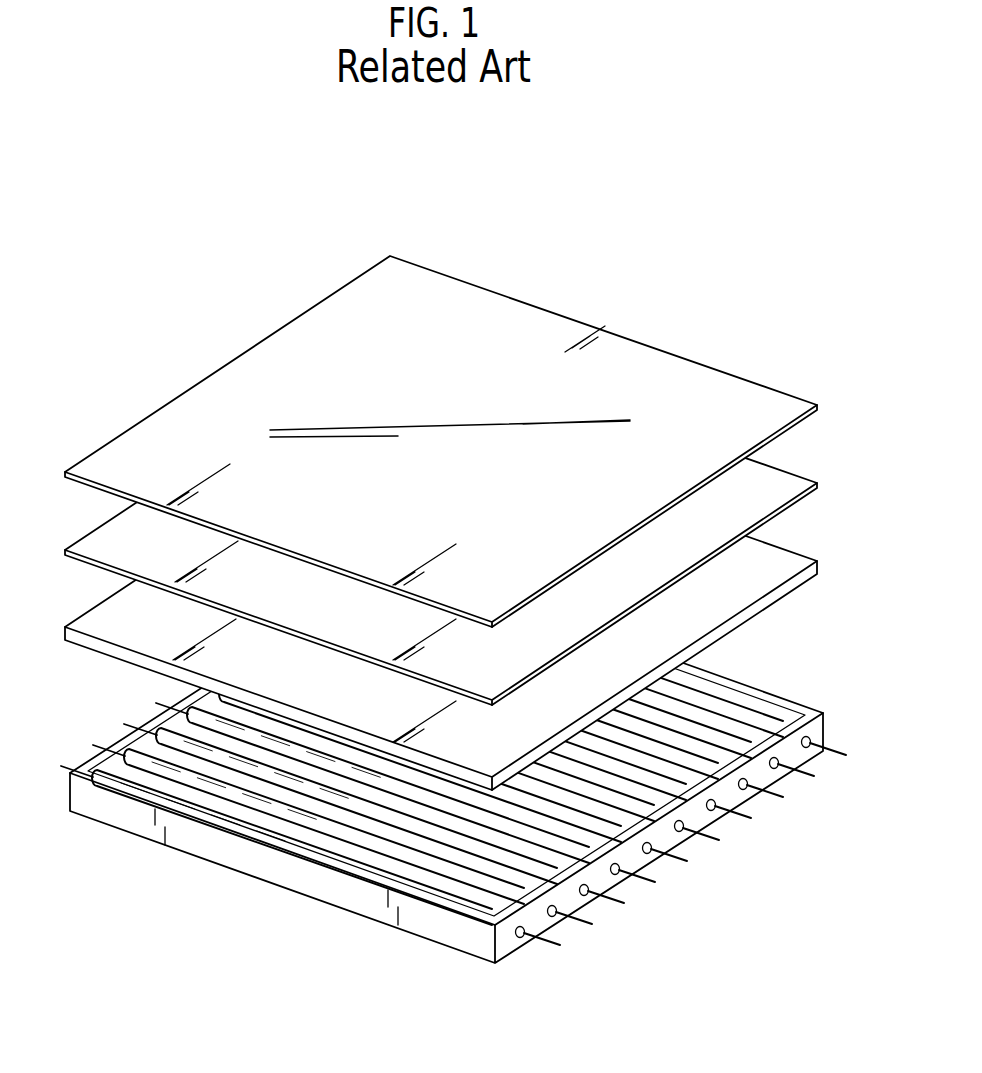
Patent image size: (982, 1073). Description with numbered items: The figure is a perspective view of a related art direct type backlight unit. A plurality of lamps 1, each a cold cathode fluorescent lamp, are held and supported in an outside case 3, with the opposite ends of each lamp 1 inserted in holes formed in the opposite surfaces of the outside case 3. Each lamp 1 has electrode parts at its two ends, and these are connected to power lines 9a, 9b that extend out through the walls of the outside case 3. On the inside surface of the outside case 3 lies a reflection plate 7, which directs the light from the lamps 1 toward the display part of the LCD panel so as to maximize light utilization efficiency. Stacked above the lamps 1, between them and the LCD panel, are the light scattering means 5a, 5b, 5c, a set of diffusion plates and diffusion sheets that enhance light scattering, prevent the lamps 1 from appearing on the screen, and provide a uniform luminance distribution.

The lamp 1 is at (298, 818).
The outside case 3 is at (477, 938).
The light scattering means 5a is at (771, 561).
The light scattering means 5b is at (771, 480).
The light scattering means 5c is at (771, 398).
The reflection plate 7 is at (393, 840).
The power line 9a is at (62, 768).
The power line 9b is at (542, 947).